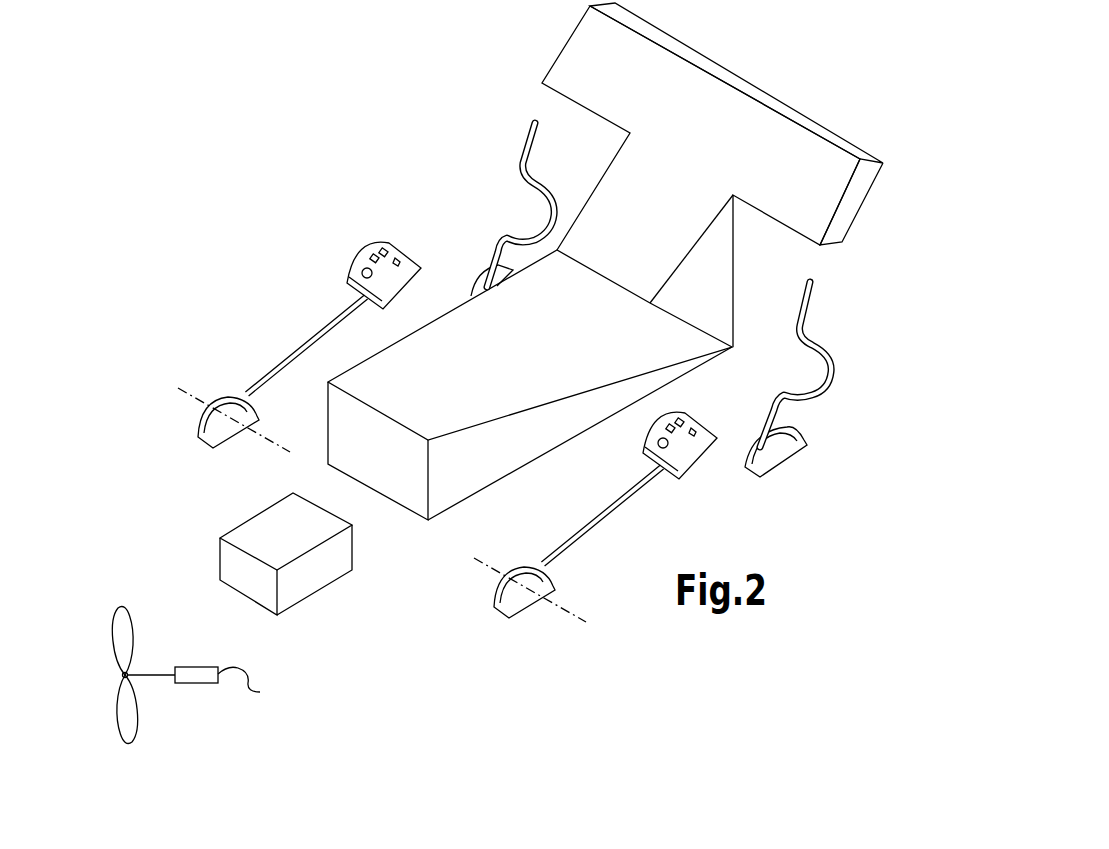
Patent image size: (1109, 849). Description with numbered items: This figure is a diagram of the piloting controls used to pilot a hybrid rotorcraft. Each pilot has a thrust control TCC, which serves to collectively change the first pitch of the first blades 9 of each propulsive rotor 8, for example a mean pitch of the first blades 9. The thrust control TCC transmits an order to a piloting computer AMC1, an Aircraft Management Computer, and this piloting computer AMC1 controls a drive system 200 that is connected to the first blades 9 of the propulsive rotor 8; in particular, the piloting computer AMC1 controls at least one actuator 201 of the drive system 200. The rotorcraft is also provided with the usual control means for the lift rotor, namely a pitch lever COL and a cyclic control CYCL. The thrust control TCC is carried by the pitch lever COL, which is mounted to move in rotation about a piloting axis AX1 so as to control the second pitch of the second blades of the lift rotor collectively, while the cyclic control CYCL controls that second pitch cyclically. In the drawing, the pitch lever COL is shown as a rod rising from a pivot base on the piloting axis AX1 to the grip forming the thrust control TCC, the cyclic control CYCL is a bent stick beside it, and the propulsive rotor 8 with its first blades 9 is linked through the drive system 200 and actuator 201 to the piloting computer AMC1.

The cyclic control CYCL is at (511, 139).
The thrust control TCC is at (347, 239).
The pitch lever COL is at (283, 341).
The piloting axis AX1 is at (190, 392).
The piloting computer AMC1 is at (323, 590).
The propulsive rotor 8 is at (140, 634).
The first blades 9 is at (124, 641).
The drive system 200 is at (199, 700).
The actuator 201 is at (266, 686).